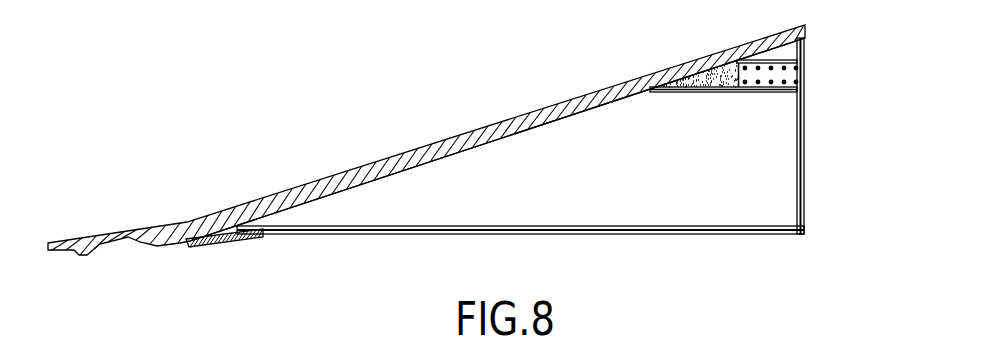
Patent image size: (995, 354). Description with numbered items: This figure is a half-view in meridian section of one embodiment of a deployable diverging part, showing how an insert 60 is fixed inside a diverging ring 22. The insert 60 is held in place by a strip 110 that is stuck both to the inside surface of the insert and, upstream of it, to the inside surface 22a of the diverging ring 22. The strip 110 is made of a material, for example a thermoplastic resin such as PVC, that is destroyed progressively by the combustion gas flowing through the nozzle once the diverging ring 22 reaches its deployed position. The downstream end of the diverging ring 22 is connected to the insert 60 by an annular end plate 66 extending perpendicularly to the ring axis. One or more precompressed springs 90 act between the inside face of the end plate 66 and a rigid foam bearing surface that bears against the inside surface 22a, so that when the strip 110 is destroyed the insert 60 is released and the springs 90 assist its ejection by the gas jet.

The diverging ring 22 is at (537, 110).
The inside surface of the diverging ring 22a is at (478, 143).
The insert 60 is at (635, 255).
The annular end plate 66 is at (803, 187).
The spring 90 is at (770, 75).
The strip 110 is at (213, 240).